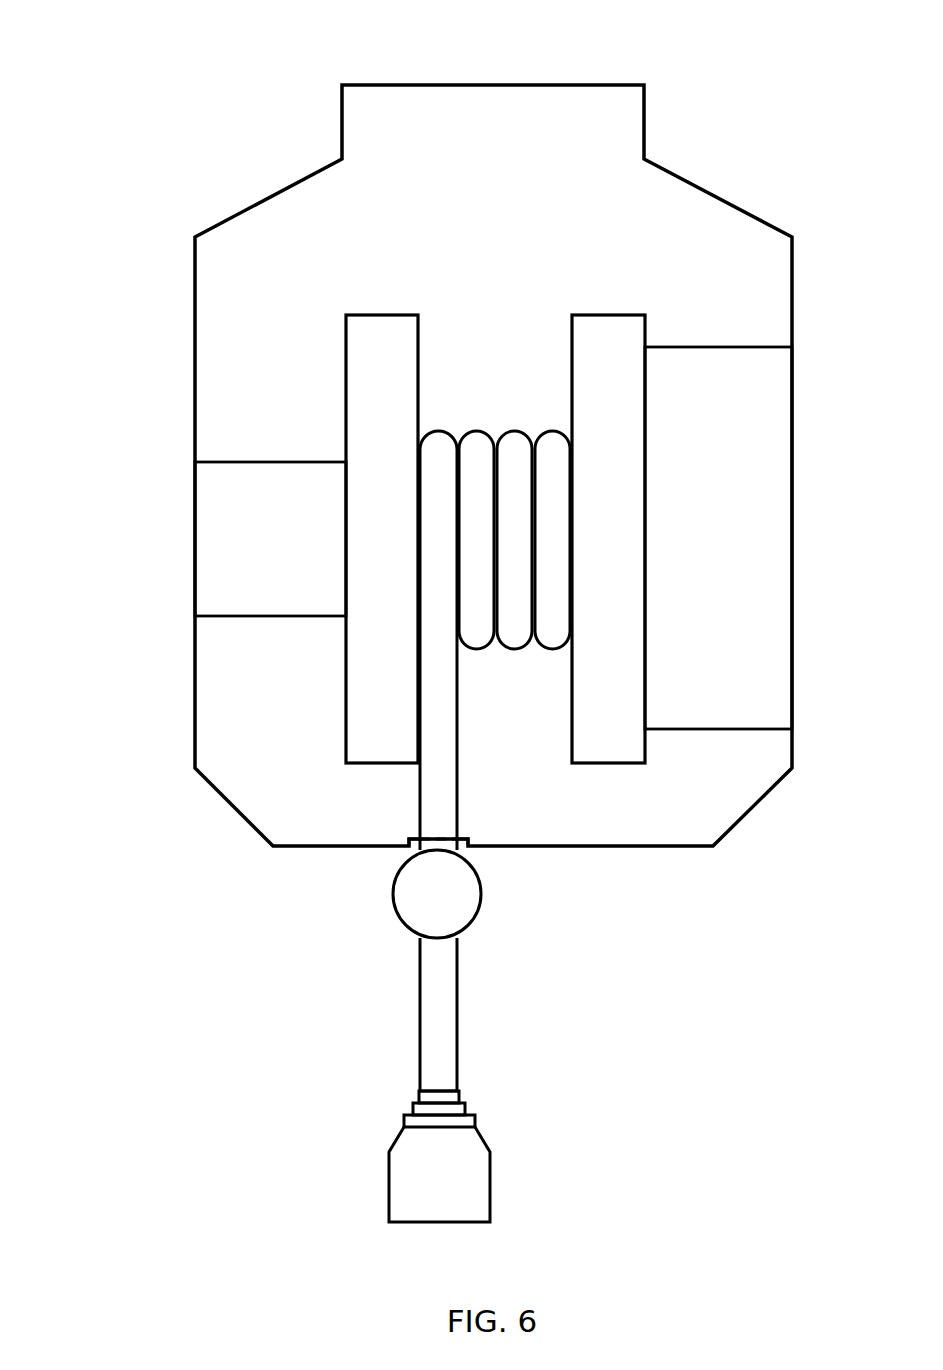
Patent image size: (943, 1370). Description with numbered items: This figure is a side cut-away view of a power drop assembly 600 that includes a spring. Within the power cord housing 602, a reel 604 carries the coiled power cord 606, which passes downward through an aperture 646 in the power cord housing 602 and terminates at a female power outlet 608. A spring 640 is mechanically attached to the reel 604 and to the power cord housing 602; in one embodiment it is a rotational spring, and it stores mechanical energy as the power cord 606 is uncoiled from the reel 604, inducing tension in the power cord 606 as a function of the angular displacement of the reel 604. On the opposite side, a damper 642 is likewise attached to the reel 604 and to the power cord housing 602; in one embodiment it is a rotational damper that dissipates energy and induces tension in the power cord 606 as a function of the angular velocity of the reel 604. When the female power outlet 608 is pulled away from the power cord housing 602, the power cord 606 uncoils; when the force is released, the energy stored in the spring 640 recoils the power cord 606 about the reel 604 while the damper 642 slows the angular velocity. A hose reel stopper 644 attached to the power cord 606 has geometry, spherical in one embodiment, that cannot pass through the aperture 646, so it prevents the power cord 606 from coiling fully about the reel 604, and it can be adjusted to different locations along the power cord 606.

The power drop assembly 600 is at (174, 90).
The power cord housing 602 is at (493, 465).
The reel 604 is at (572, 341).
The power cord 606 is at (459, 1053).
The female power outlet 608 is at (490, 1152).
The spring 640 is at (270, 539).
The damper 642 is at (718, 538).
The hose reel stopper 644 is at (437, 894).
The aperture 646 is at (418, 838).